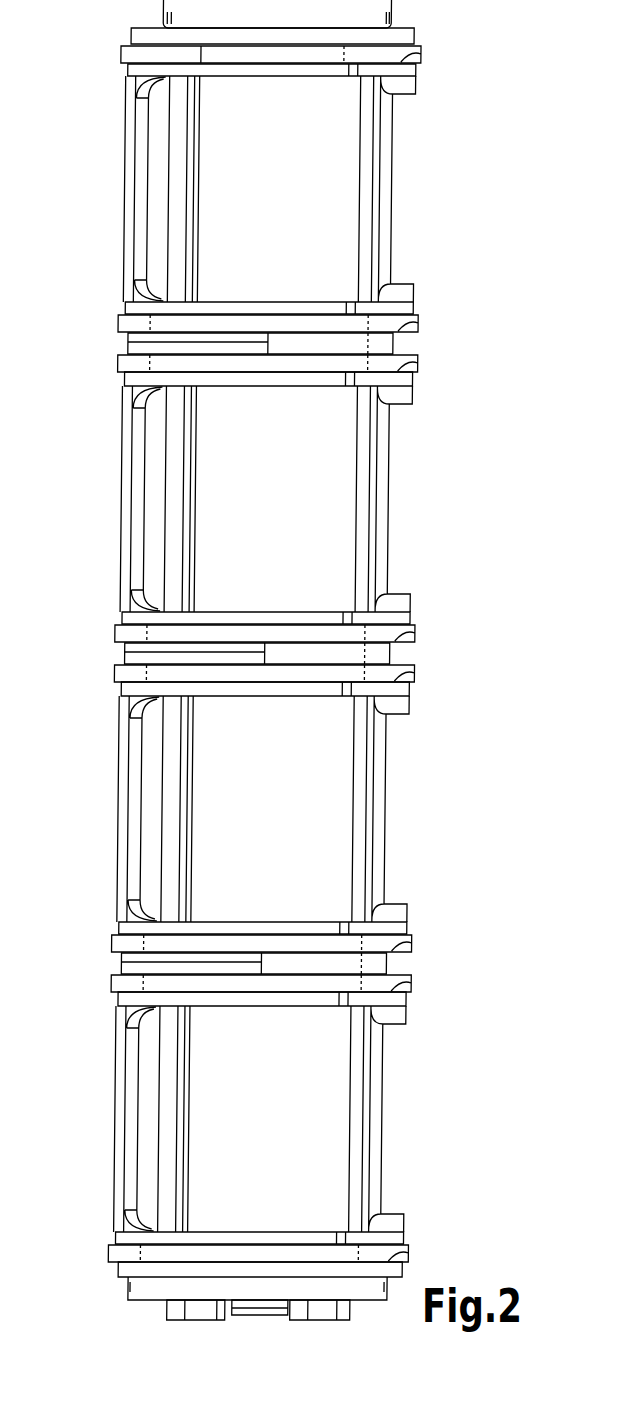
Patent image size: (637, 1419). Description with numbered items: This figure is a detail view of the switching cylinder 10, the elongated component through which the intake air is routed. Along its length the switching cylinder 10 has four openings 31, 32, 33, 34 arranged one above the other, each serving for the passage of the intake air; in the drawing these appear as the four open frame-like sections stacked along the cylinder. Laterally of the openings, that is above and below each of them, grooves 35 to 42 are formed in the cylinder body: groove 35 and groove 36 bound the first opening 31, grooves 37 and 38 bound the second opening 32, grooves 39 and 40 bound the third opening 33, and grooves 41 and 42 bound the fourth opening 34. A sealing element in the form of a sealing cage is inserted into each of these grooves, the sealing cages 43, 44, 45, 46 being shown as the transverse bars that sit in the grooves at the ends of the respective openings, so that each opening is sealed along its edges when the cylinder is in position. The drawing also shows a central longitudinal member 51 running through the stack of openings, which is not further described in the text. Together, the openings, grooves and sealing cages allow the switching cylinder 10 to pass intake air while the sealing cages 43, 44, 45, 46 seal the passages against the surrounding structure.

The switching cylinder 10 is at (437, 585).
The opening 31 is at (340, 240).
The opening 32 is at (340, 525).
The opening 33 is at (335, 835).
The opening 34 is at (330, 1135).
The groove 35 is at (420, 57).
The groove 36 is at (412, 318).
The groove 37 is at (414, 370).
The groove 38 is at (412, 630).
The groove 39 is at (410, 680).
The groove 40 is at (408, 936).
The groove 41 is at (406, 988).
The groove 42 is at (405, 1250).
The sealing cage 43 is at (118, 57).
The sealing cage 44 is at (115, 364).
The sealing cage 45 is at (112, 673).
The sealing cage 46 is at (110, 984).
The central column 51 is at (189, 198).